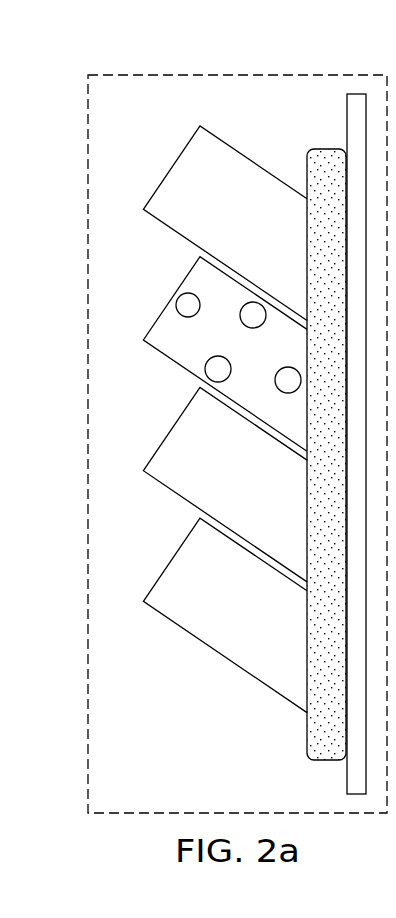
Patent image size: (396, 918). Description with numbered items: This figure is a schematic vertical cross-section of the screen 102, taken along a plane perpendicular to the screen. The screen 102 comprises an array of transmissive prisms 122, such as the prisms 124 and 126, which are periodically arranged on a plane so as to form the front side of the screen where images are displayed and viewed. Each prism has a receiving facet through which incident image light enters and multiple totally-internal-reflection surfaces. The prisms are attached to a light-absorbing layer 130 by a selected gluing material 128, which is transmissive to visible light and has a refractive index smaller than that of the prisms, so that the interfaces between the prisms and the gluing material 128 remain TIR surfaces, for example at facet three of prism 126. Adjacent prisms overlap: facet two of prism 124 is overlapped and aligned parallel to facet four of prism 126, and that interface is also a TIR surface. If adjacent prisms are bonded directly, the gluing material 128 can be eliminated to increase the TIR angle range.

The screen 102 is at (86, 192).
The array of transmissive prisms 122 is at (102, 91).
The prism 124 is at (170, 167).
The prism 126 is at (170, 300).
The gluing material 128 is at (307, 730).
The light-absorbing layer 130 is at (347, 120).